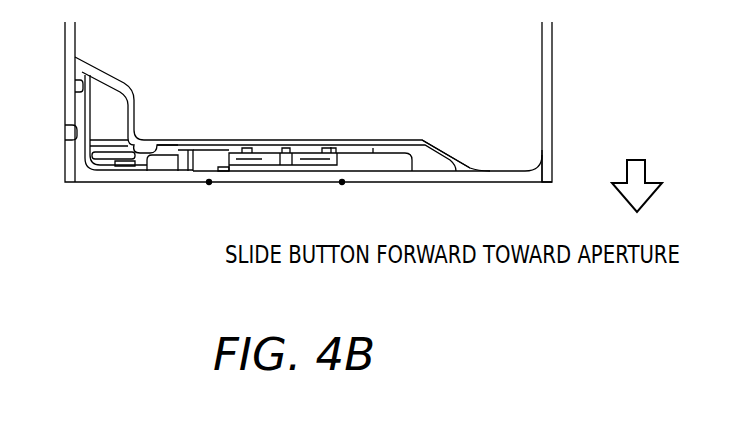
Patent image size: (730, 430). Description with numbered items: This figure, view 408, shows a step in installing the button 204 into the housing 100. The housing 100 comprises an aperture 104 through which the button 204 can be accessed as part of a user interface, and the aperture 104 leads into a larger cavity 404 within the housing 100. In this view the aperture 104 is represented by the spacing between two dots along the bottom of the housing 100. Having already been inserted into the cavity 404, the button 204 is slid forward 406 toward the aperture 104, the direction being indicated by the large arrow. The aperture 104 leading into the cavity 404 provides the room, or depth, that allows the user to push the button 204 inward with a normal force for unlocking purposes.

The housing 100 is at (552, 116).
The aperture 104 is at (297, 184).
The button 204 is at (374, 150).
The cavity 404 is at (432, 163).
The forward sliding 406 is at (622, 172).
The view 408 is at (725, 171).